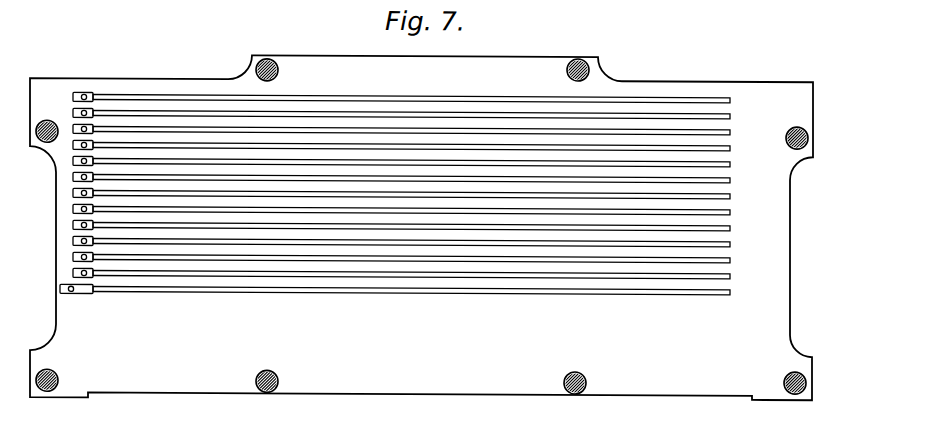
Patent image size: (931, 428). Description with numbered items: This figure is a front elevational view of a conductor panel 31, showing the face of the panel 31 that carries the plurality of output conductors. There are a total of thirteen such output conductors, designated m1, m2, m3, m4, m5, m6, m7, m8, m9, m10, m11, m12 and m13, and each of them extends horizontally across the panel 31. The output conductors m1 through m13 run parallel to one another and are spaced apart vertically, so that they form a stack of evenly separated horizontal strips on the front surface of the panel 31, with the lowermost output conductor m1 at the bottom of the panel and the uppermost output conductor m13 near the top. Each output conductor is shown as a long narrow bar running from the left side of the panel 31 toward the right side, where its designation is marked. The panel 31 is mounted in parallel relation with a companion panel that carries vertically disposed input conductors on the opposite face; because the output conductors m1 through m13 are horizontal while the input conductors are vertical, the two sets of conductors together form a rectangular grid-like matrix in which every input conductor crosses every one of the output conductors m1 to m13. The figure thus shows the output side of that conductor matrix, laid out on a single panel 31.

The panel 31 is at (531, 54).
The output conductor m1 is at (730, 288).
The output conductor m2 is at (730, 272).
The output conductor m3 is at (730, 256).
The output conductor m4 is at (730, 240).
The output conductor m5 is at (730, 224).
The output conductor m6 is at (730, 208).
The output conductor m7 is at (730, 192).
The output conductor m8 is at (730, 176).
The output conductor m9 is at (730, 160).
The output conductor m10 is at (730, 144).
The output conductor m11 is at (730, 128).
The output conductor m12 is at (730, 112).
The output conductor m13 is at (730, 96).